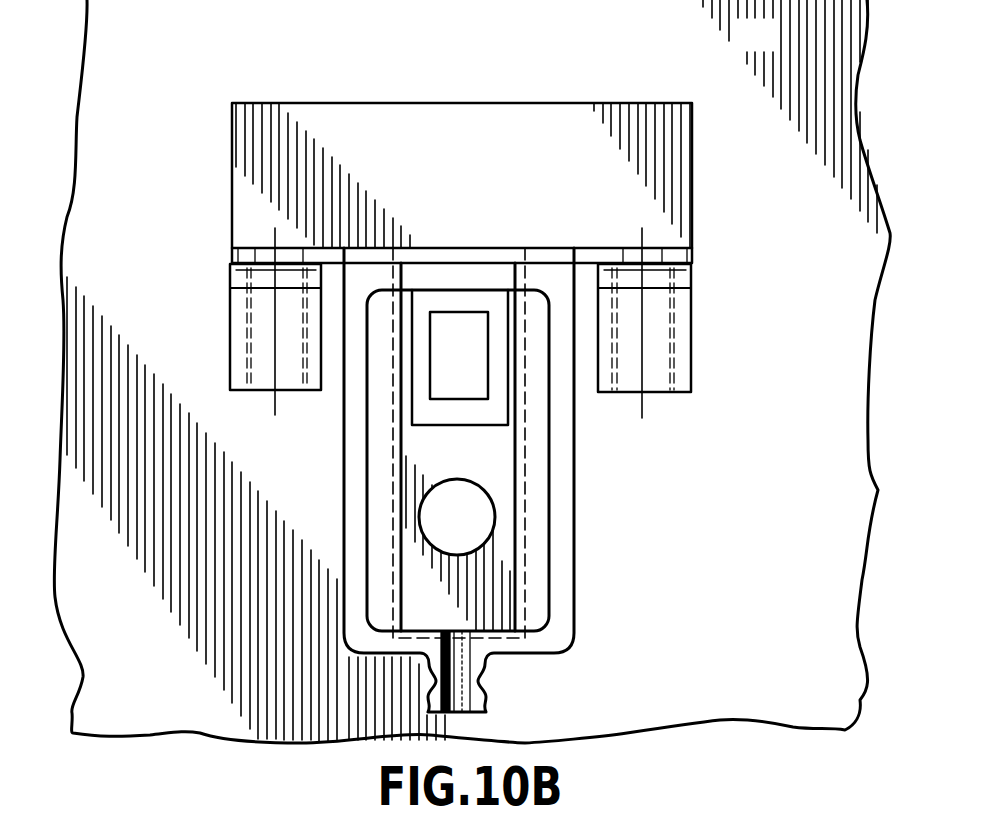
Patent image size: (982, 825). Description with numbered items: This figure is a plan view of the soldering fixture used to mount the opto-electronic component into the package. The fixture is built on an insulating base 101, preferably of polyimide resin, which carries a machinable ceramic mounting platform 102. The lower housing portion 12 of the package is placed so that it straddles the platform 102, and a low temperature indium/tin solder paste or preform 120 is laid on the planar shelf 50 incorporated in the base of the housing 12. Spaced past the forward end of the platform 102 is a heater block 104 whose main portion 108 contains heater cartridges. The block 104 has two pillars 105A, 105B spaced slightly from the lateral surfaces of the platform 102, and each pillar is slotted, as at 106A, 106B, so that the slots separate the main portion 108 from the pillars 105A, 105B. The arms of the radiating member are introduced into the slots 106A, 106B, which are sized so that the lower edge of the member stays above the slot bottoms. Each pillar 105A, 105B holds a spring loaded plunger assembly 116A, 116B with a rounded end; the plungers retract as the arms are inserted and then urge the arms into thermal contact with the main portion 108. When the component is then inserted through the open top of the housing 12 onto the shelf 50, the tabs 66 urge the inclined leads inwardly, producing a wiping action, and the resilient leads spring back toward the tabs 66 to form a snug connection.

The insulating base 101 is at (828, 582).
The ceramic mounting platform 102 is at (527, 555).
The heater block 104 is at (706, 108).
The pillar 105A is at (240, 348).
The pillar 105B is at (680, 333).
The slot 106A is at (237, 266).
The slot 106B is at (690, 266).
The main portion of the heater block 108 is at (576, 126).
The spring loaded plunger assembly 116A is at (288, 375).
The spring loaded plunger assembly 116B is at (652, 377).
The lower housing portion 12 is at (412, 533).
The planar shelf 50 is at (427, 300).
The tab 66 is at (528, 374).
The solder paste or preform 120 is at (458, 330).